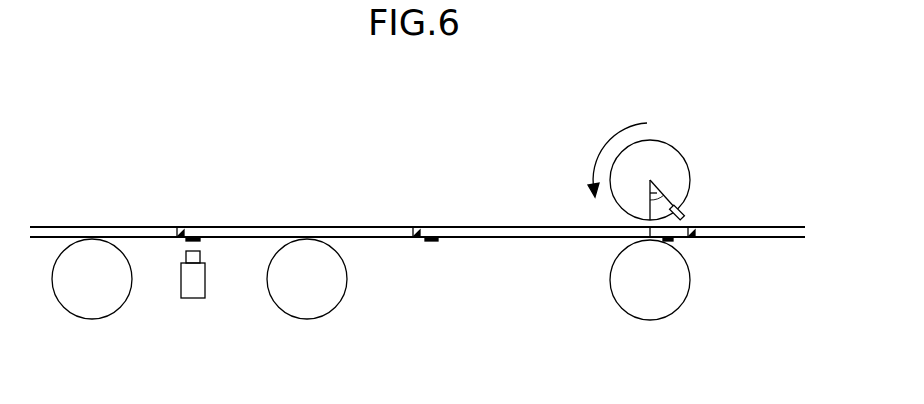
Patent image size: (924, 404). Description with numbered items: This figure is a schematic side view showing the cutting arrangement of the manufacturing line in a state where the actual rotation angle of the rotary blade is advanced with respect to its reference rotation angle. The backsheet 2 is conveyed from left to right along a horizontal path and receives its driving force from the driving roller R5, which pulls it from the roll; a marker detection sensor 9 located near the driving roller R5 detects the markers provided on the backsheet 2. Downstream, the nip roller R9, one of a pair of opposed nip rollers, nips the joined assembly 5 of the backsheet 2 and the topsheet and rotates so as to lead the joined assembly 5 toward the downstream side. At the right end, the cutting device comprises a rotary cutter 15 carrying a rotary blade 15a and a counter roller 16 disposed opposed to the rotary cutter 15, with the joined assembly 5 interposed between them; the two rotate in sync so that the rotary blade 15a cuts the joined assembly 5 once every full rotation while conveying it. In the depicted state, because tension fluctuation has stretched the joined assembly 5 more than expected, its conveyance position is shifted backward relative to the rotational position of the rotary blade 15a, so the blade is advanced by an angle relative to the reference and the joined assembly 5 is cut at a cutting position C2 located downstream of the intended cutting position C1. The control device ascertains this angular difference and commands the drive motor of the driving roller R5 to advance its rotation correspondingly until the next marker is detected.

The backsheet 2 is at (140, 227).
The joined assembly 5 is at (520, 227).
The cutting position C1 is at (180, 229).
The cutting position C2 is at (690, 238).
The driving roller R5 is at (85, 310).
The nip roller R9 is at (303, 310).
The marker detection sensor 9 is at (188, 300).
The rotary cutter 15 is at (670, 163).
The rotary blade 15a is at (684, 214).
The counter roller 16 is at (647, 305).